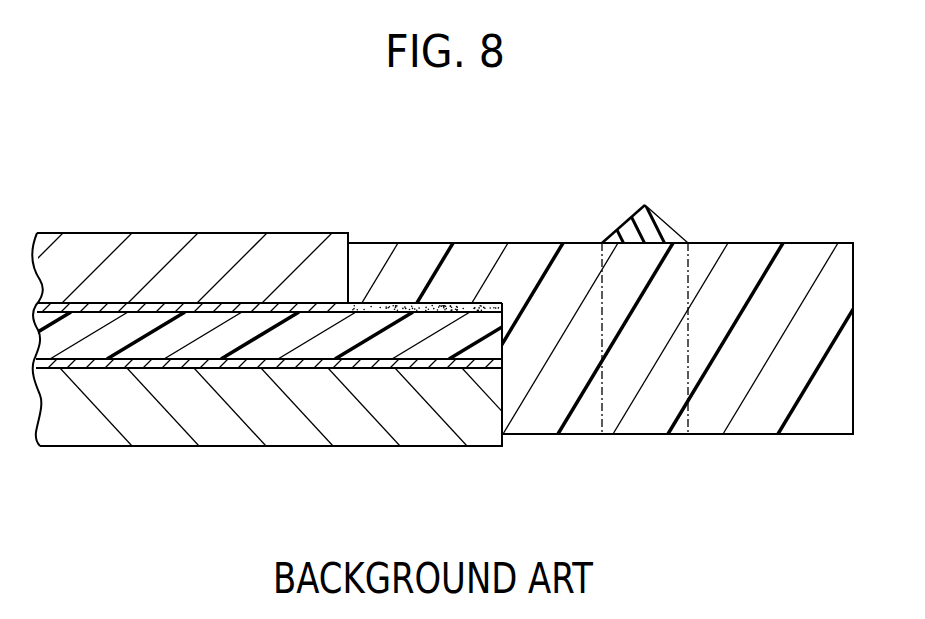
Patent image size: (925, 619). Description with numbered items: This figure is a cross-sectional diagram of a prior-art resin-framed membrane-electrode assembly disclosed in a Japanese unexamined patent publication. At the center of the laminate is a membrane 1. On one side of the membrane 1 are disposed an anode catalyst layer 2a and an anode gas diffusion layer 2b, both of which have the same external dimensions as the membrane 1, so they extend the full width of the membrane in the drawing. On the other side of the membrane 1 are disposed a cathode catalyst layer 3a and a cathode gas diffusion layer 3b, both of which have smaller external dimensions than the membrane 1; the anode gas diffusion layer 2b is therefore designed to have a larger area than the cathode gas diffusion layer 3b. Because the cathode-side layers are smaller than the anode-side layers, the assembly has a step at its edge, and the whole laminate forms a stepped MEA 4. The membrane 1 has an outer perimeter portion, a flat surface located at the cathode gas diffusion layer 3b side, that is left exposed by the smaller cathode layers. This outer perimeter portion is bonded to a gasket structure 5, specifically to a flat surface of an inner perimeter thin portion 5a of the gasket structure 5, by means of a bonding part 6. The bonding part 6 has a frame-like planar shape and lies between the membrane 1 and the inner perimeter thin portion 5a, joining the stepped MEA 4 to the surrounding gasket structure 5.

The membrane 1 is at (95, 347).
The anode catalyst layer 2a is at (180, 366).
The anode gas diffusion layer 2b is at (233, 440).
The cathode catalyst layer 3a is at (120, 308).
The cathode gas diffusion layer 3b is at (165, 243).
The stepped MEA 4 is at (240, 224).
The gasket structure 5 is at (803, 252).
The inner perimeter thin portion 5a is at (410, 258).
The bonding part 6 is at (457, 303).